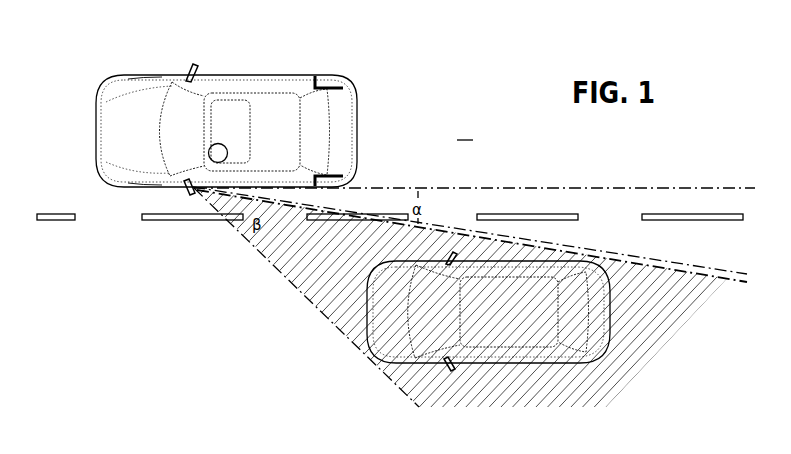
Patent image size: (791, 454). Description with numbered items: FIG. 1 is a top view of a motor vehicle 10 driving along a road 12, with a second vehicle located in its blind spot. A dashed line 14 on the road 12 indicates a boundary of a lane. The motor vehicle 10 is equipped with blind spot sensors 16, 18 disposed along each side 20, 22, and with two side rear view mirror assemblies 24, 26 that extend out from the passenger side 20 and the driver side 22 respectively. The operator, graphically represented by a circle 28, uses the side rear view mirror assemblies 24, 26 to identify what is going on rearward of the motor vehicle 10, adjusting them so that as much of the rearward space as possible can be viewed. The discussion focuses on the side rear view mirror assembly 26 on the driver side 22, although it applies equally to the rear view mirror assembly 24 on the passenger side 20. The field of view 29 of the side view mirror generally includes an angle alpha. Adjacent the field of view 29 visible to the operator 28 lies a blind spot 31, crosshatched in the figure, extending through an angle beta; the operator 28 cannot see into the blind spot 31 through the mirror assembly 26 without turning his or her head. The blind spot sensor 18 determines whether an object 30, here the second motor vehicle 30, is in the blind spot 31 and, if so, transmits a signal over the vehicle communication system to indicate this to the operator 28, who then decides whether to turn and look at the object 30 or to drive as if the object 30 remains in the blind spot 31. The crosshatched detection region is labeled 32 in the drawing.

The motor vehicle 10 is at (98, 108).
The road 12 is at (465, 130).
The dashed line 14 is at (678, 221).
The blind spot sensor 16 is at (330, 76).
The blind spot sensor 18 is at (327, 183).
The passenger side 20 is at (146, 75).
The driver side 22 is at (141, 188).
The side rear view mirror assembly 24 is at (196, 64).
The side rear view mirror assembly 26 is at (186, 191).
The operator 28 is at (223, 144).
The field of view 29 is at (553, 186).
The object 30 is at (368, 316).
The blind spot 31 is at (283, 276).
The sensor detection zone 32 is at (395, 312).